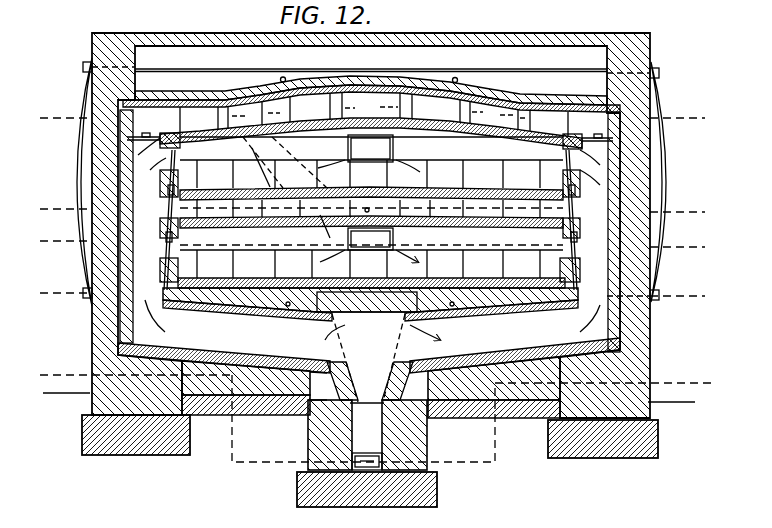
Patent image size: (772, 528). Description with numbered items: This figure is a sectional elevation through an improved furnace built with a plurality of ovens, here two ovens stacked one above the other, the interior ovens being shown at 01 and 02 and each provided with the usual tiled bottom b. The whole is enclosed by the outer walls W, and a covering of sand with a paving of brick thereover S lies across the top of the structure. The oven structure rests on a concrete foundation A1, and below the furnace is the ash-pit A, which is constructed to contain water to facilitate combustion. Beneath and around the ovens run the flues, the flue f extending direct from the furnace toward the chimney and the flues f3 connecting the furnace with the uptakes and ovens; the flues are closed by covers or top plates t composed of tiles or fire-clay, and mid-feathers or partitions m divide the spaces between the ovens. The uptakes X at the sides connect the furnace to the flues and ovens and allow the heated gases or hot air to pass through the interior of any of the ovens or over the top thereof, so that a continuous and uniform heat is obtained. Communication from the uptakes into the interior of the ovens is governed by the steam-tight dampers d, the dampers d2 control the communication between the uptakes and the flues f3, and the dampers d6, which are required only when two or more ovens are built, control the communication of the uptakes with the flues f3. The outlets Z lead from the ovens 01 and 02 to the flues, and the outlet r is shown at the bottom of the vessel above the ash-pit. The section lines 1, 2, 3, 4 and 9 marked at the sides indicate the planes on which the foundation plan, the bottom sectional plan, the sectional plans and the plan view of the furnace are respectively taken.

The outer wall W is at (103, 52).
The covering of sand S is at (371, 62).
The cover or top plate t is at (215, 190).
The tiled bottom b is at (527, 103).
The flue f3 is at (374, 114).
The mid-feather m is at (386, 114).
The damper d2 is at (160, 120).
The damper d is at (178, 146).
The outlet Z is at (331, 198).
The interior oven 02 is at (369, 178).
The interior oven 01 is at (369, 266).
The damper d6 is at (166, 203).
The uptake X is at (156, 291).
The flue f is at (369, 255).
The outlet funnel r is at (361, 358).
The ash-pit A is at (367, 435).
The concrete foundation A1 is at (162, 455).
The section line 1 1 is at (371, 414).
The section line 2 2 is at (369, 296).
The section line 3 3 is at (369, 246).
The section line 4 4 is at (369, 120).
The section line 9 9 is at (370, 212).